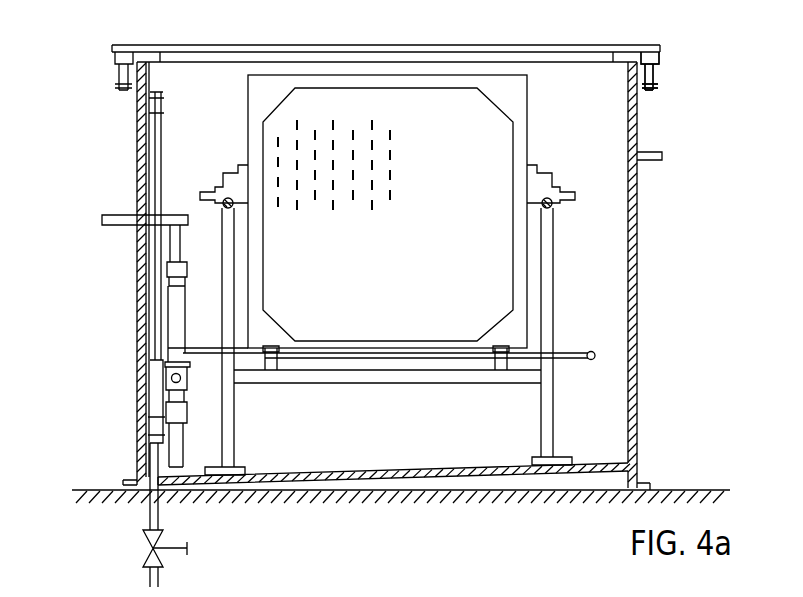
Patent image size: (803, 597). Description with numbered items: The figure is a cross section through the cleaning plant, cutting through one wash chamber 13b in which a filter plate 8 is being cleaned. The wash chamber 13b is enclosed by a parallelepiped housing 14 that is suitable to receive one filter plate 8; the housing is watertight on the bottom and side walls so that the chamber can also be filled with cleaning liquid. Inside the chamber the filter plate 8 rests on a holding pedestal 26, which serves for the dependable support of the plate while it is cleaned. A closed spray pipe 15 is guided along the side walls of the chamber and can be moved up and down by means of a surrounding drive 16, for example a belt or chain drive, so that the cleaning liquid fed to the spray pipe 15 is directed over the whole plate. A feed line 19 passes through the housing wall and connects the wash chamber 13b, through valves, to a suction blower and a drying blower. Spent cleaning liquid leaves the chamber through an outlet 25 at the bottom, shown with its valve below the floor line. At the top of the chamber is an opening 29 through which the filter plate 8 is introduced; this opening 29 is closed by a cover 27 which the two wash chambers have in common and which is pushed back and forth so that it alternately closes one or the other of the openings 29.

The filter plate 8 is at (446, 95).
The wash chamber 13b is at (638, 273).
The housing 14 is at (637, 380).
The spray pipe 15 is at (596, 355).
The surrounding drive 16 is at (153, 250).
The feed line 19 is at (652, 152).
The outlet 25 is at (150, 517).
The holding pedestal 26 is at (228, 313).
The cover 27 is at (547, 55).
The opening 29 is at (587, 70).